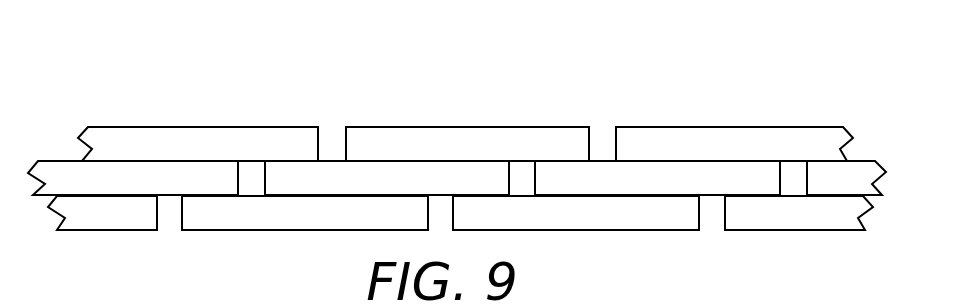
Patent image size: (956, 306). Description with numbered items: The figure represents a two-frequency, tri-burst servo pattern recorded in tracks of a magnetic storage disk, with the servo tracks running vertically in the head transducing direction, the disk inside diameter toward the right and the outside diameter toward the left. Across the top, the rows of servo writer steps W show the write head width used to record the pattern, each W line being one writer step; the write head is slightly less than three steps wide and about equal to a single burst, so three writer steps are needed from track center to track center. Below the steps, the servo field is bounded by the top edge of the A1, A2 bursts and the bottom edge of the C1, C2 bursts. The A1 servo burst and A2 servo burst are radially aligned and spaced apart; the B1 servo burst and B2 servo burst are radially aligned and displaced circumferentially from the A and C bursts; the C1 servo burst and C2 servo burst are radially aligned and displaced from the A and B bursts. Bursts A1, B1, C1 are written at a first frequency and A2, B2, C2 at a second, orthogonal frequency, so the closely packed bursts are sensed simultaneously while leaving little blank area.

The servo writer step W is at (42, 55).
The A1 servo burst A1 is at (465, 144).
The A2 servo burst A2 is at (467, 144).
The B1 servo burst B1 is at (575, 178).
The B2 servo burst B2 is at (404, 178).
The C1 servo burst C1 is at (373, 213).
The C2 servo burst C2 is at (527, 213).